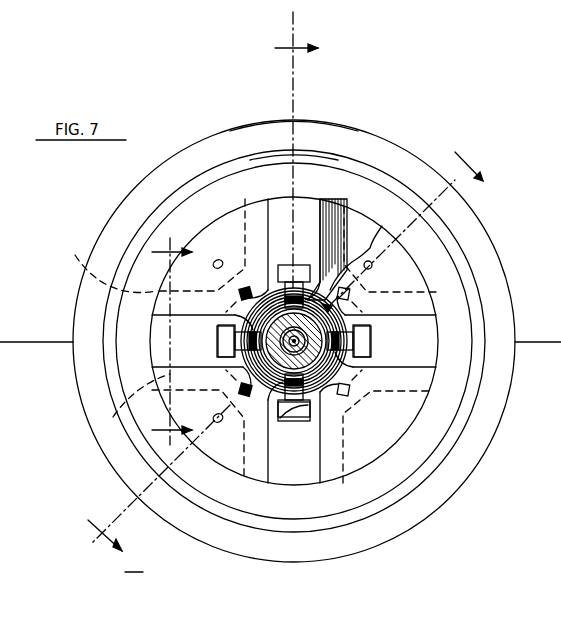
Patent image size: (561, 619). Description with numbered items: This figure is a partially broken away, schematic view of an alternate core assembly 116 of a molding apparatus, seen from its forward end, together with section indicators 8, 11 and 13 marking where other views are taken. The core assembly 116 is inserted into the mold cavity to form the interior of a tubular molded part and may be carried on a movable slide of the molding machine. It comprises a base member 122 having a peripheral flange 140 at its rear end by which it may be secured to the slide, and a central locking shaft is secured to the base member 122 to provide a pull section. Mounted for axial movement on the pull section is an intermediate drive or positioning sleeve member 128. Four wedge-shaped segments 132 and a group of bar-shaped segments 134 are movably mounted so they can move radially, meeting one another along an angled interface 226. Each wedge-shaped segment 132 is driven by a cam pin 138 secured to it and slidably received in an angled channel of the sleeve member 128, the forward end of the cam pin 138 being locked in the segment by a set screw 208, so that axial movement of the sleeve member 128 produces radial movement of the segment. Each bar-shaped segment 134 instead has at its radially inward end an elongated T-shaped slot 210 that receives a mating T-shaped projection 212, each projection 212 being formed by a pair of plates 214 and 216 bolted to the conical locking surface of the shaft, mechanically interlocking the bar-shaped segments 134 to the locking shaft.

The core assembly 116 is at (452, 400).
The base member 122 is at (474, 472).
The sleeve member 128 is at (368, 174).
The wedge-shaped segments 132 is at (232, 238).
The bar-shaped segments 134 is at (296, 220).
The cam pin 138 is at (238, 290).
The peripheral flange 140 is at (352, 124).
The set screw 208 is at (345, 258).
The elongated slot 210 is at (346, 393).
The projection 212 is at (300, 410).
The plate 214 is at (228, 332).
The plate 216 is at (360, 340).
The angled interface 226 is at (78, 256).
The section line 8 is at (204, 258).
The section line 11 is at (343, 48).
The section line 13 is at (508, 196).